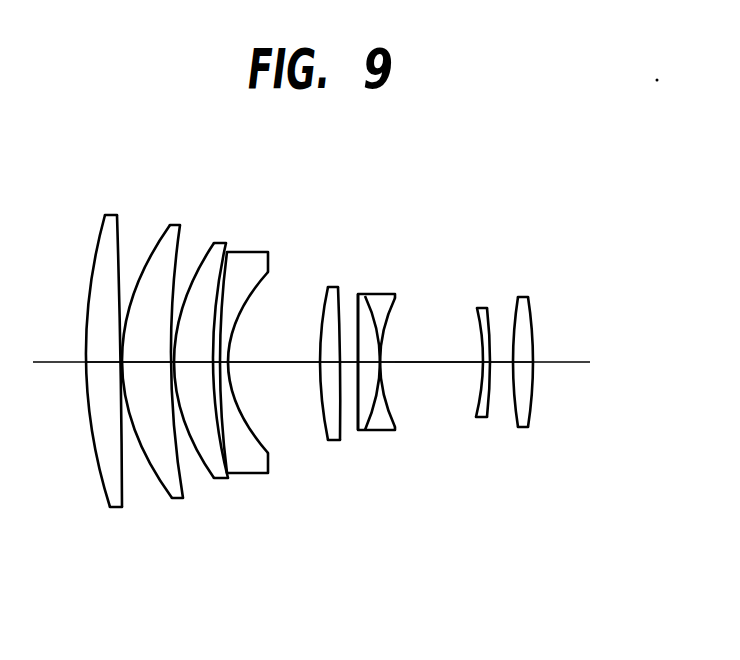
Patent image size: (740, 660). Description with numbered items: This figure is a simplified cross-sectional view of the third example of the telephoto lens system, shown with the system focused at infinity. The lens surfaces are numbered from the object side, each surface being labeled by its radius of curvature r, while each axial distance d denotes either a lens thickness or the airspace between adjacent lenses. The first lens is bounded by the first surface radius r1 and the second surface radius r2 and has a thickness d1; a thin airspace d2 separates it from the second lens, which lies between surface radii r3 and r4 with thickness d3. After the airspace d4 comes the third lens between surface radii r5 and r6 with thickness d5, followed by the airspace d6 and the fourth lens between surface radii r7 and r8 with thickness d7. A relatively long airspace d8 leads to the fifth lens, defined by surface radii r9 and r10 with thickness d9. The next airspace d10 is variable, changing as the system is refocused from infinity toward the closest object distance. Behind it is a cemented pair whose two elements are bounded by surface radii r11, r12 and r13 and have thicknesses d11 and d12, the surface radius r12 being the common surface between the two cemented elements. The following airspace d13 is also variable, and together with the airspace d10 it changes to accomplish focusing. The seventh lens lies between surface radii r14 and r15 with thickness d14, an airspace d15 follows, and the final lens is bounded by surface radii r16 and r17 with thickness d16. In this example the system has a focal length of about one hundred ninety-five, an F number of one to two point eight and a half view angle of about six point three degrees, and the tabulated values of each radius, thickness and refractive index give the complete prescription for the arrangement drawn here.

The radius of curvature of first lens surface r1 is at (101, 237).
The radius of curvature of second lens surface r2 is at (119, 218).
The radius of curvature of third lens surface r3 is at (152, 250).
The radius of curvature of fourth lens surface r4 is at (184, 252).
The radius of curvature of fifth lens surface r5 is at (207, 262).
The radius of curvature of sixth lens surface r6 is at (223, 244).
The radius of curvature of seventh lens surface r7 is at (238, 252).
The radius of curvature of eighth lens surface r8 is at (275, 272).
The radius of curvature of ninth lens surface r9 is at (325, 307).
The radius of curvature of tenth lens surface r10 is at (339, 305).
The radius of curvature of eleventh lens surface r11 is at (355, 300).
The radius of curvature of twelfth lens surface r12 is at (375, 295).
The radius of curvature of thirteenth lens surface r13 is at (396, 296).
The radius of curvature of fourteenth lens surface r14 is at (478, 314).
The radius of curvature of fifteenth lens surface r15 is at (488, 310).
The radius of curvature of sixteenth lens surface r16 is at (518, 299).
The radius of curvature of seventeenth lens surface r17 is at (530, 300).
The lens thickness of first lens d1 is at (100, 362).
The airspace between first and second lenses d2 is at (120, 362).
The lens thickness of second lens d3 is at (149, 362).
The airspace between second and third lenses d4 is at (171, 362).
The lens thickness of third lens d5 is at (193, 362).
The airspace between third and fourth lenses d6 is at (217, 362).
The lens thickness of fourth lens d7 is at (225, 362).
The airspace between fourth and fifth lenses d8 is at (287, 362).
The lens thickness of fifth lens d9 is at (329, 362).
The variable airspace behind fifth lens d10 is at (347, 362).
The lens thickness of first cemented element d11 is at (363, 362).
The lens thickness of second cemented element d12 is at (384, 362).
The variable airspace behind cemented pair d13 is at (435, 362).
The lens thickness of seventh lens d14 is at (485, 362).
The airspace between seventh and eighth lenses d15 is at (500, 362).
The lens thickness of eighth lens d16 is at (522, 362).